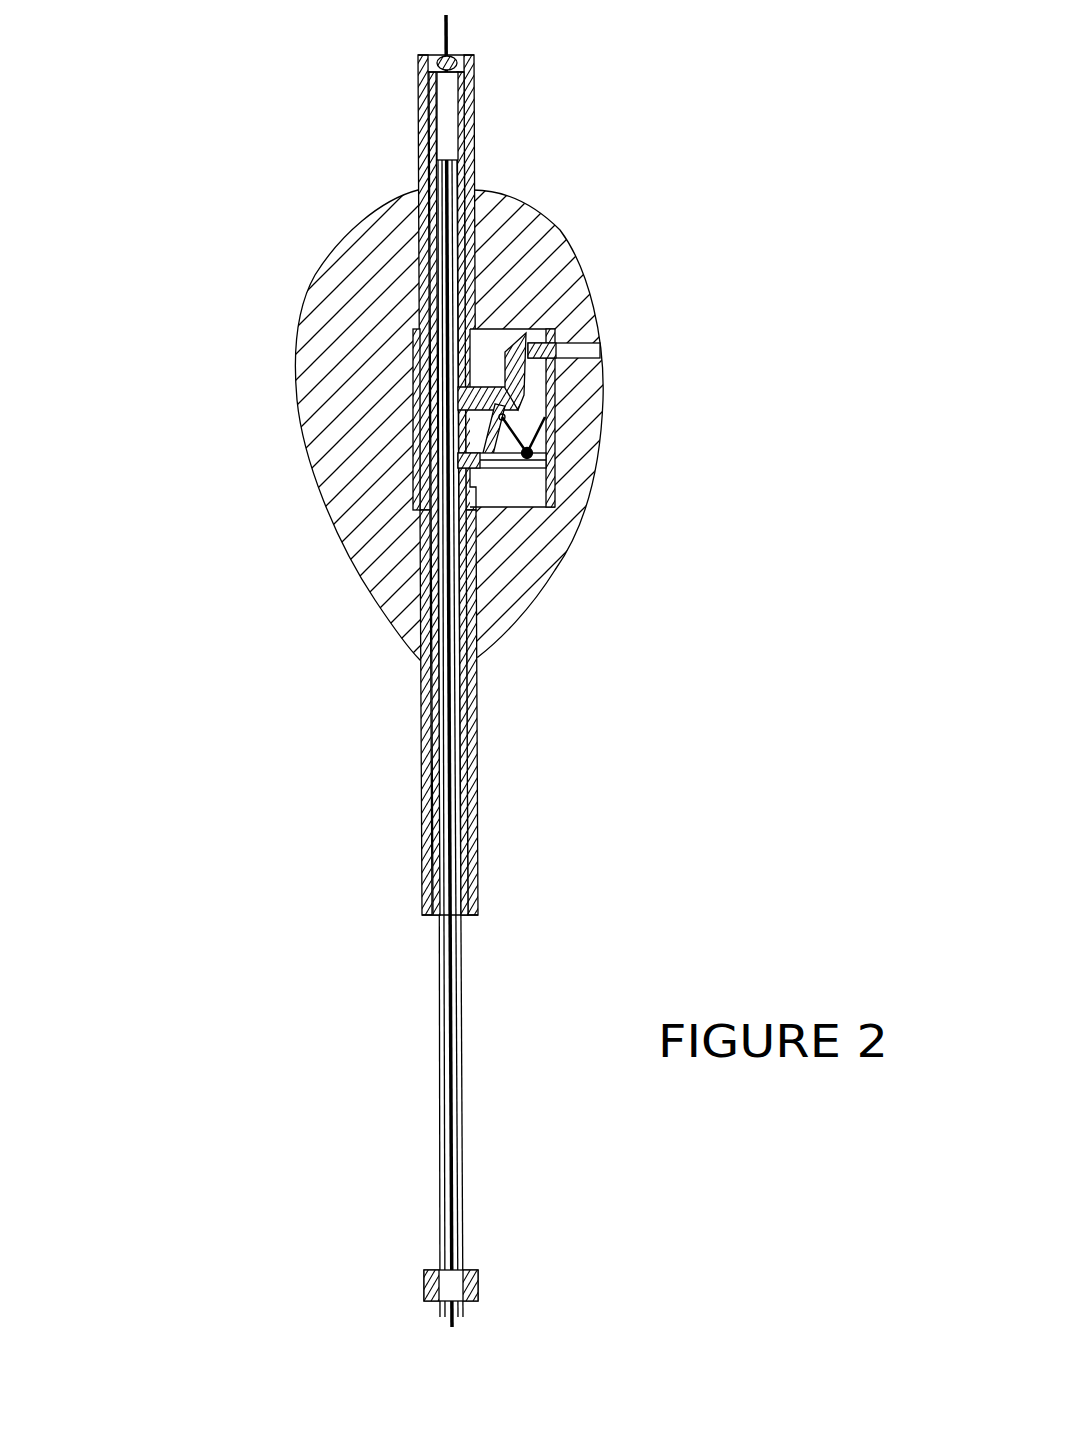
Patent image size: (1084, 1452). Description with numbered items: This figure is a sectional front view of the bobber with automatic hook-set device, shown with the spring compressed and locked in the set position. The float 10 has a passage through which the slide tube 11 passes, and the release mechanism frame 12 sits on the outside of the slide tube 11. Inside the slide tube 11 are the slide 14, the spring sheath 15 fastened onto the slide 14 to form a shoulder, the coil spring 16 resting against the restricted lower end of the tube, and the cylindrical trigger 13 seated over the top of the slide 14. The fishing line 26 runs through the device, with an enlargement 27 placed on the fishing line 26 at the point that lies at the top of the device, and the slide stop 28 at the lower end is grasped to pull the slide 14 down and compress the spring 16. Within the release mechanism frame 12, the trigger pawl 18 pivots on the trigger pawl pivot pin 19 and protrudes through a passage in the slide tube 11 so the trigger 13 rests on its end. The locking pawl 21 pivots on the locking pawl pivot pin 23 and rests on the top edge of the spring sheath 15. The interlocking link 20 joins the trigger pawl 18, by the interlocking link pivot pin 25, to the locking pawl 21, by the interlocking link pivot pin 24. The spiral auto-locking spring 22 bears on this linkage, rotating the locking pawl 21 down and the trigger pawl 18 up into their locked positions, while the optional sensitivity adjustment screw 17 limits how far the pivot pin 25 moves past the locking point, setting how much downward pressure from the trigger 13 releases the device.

The float 10 is at (333, 283).
The slide tube 11 is at (432, 155).
The release mechanism frame 12 is at (413, 338).
The trigger 13 is at (427, 357).
The slide 14 is at (460, 413).
The spring sheath 15 is at (440, 478).
The spring 16 is at (427, 528).
The optional sensitivity adjustment screw 17 is at (550, 337).
The trigger pawl 18 is at (562, 352).
The trigger pawl pivot pin 19 is at (528, 382).
The interlocking link 20 is at (500, 422).
The locking pawl 21 is at (550, 487).
The auto-locking spring 22 is at (545, 434).
The locking pawl pivot pin 23 is at (532, 456).
The interlocking link pivot pin 24 is at (512, 465).
The interlocking link pivot pin 25 is at (505, 418).
The fishing line 26 is at (446, 44).
The enlargement placed on fishing line 27 is at (510, 45).
The slide stop 28 is at (478, 1278).